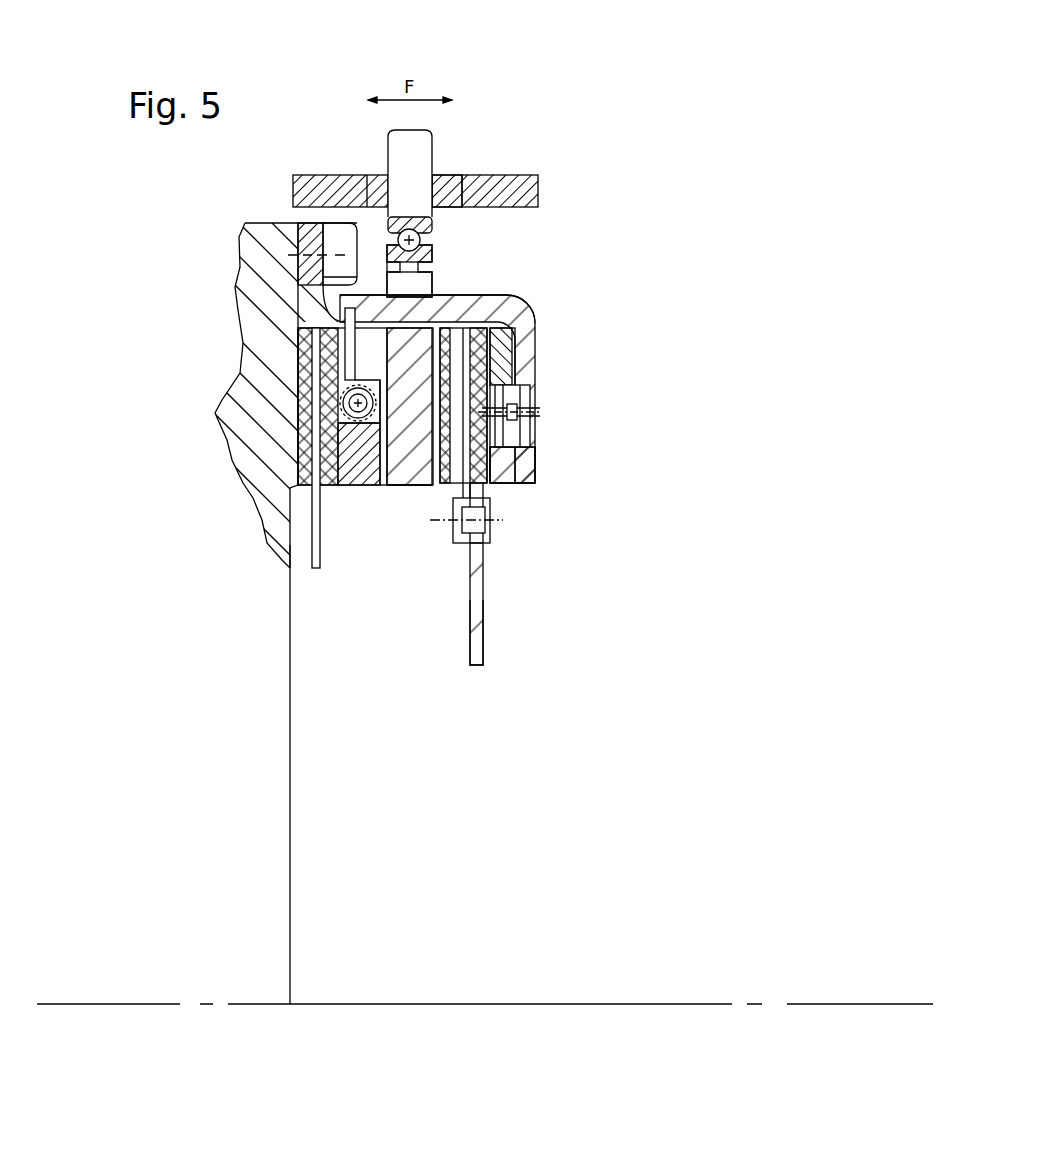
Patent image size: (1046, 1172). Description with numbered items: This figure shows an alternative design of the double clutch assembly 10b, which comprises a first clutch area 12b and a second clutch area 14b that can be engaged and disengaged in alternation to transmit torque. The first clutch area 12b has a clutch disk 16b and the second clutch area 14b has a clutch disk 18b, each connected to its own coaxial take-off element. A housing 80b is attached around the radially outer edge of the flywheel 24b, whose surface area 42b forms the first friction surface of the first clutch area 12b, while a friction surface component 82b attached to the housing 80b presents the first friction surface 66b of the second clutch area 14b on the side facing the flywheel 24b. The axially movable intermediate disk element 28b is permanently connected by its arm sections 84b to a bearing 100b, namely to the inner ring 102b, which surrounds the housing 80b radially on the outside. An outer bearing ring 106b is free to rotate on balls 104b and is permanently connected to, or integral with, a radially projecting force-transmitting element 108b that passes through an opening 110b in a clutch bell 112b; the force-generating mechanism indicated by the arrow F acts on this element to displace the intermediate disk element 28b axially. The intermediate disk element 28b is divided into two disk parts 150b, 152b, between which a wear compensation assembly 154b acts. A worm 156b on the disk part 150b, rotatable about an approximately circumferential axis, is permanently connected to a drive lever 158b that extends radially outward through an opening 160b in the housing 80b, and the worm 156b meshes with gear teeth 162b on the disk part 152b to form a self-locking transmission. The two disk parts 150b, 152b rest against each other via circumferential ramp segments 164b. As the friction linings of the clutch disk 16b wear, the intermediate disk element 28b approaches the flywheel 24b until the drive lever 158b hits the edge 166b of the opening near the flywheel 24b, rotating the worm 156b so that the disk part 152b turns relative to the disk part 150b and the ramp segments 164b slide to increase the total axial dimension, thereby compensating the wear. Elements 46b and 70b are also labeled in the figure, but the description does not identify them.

The double clutch assembly 10b is at (630, 242).
The first clutch area 12b is at (337, 612).
The second clutch area 14b is at (452, 644).
The clutch disk 16b is at (309, 579).
The clutch disk 18b is at (500, 603).
The flywheel 24b is at (237, 300).
The intermediate disk element 28b is at (444, 285).
The surface area of the flywheel 42b is at (297, 477).
The roller 46b is at (343, 394).
The first friction surface 66b is at (487, 482).
The adjusting screw 70b is at (505, 440).
The housing 80b is at (530, 353).
The friction surface component 82b is at (502, 472).
The arm sections 84b is at (432, 275).
The bearing 100b is at (376, 238).
The inner ring of the bearing 102b is at (300, 242).
The balls 104b is at (530, 202).
The outer bearing ring 106b is at (403, 220).
The force-transmitting element 108b is at (418, 163).
The opening 110b is at (447, 192).
The clutch bell 112b is at (432, 234).
The disk part 150b is at (367, 487).
The disk part 152b is at (413, 487).
The wear compensation assembly 154b is at (314, 414).
The worm 156b is at (355, 470).
The drive lever 158b is at (347, 352).
The opening 160b is at (445, 297).
The gear teeth 162b is at (398, 487).
The ramp segments 164b is at (290, 550).
The edge of the opening 166b is at (327, 282).